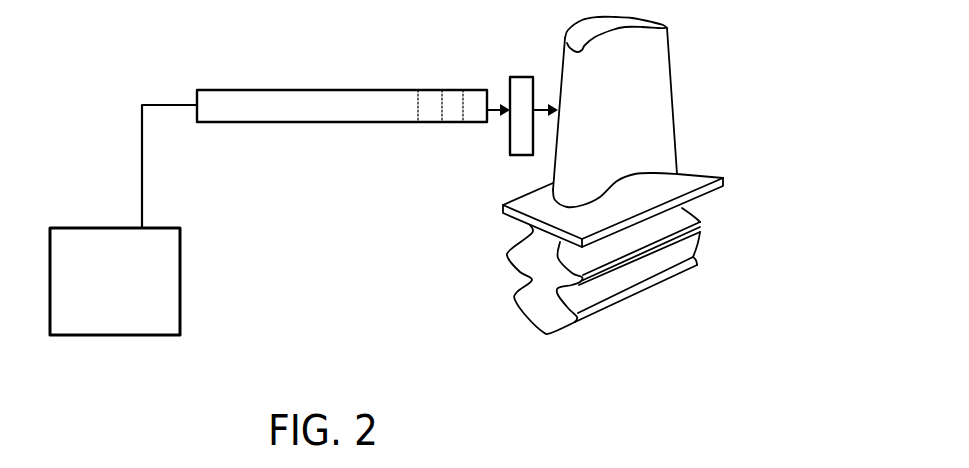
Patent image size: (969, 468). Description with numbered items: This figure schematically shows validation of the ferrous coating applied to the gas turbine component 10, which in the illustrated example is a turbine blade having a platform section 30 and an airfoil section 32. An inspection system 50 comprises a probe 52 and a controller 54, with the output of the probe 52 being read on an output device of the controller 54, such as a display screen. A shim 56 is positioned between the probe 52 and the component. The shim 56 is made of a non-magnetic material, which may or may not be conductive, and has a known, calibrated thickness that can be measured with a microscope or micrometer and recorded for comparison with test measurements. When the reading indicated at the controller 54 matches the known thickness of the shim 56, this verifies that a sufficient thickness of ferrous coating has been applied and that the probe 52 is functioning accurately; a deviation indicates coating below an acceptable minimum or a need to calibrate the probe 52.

The gas turbine component 10 is at (738, 168).
The platform section 30 is at (665, 220).
The airfoil section 32 is at (657, 132).
The inspection system 50 is at (300, 70).
The probe 52 is at (373, 97).
The controller 54 is at (180, 278).
The shim 56 is at (522, 95).